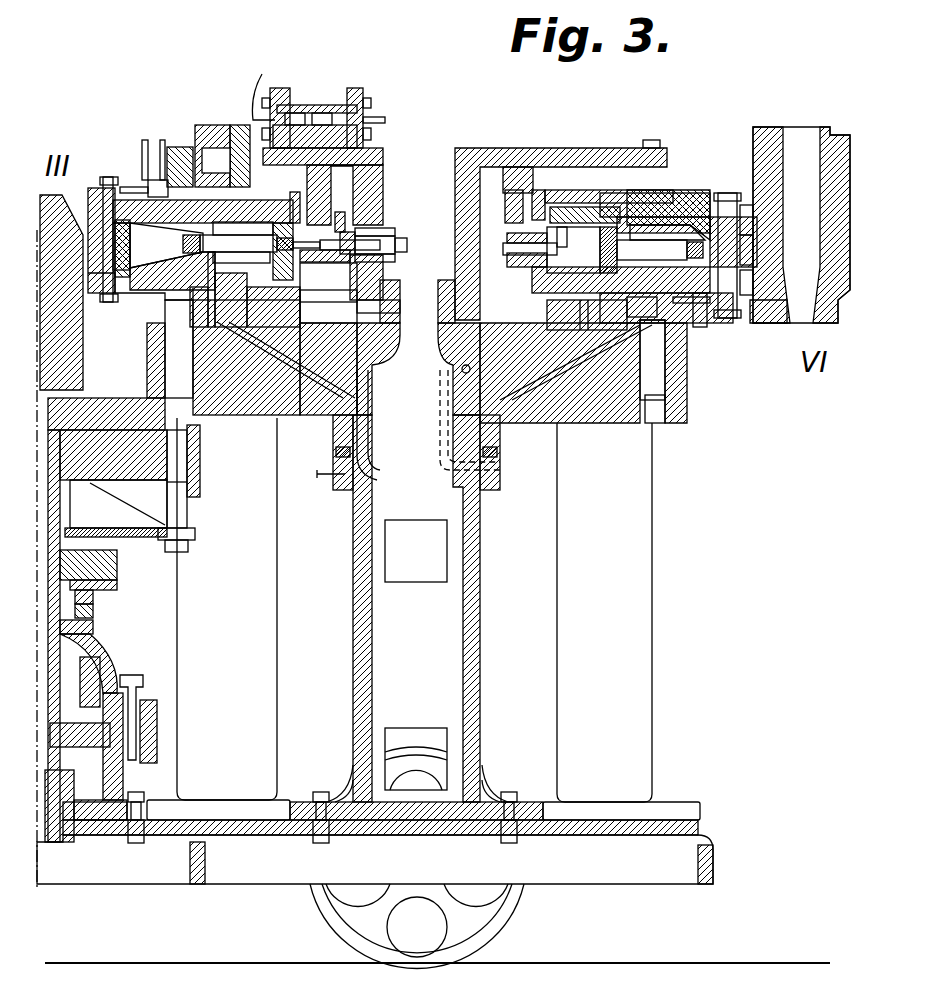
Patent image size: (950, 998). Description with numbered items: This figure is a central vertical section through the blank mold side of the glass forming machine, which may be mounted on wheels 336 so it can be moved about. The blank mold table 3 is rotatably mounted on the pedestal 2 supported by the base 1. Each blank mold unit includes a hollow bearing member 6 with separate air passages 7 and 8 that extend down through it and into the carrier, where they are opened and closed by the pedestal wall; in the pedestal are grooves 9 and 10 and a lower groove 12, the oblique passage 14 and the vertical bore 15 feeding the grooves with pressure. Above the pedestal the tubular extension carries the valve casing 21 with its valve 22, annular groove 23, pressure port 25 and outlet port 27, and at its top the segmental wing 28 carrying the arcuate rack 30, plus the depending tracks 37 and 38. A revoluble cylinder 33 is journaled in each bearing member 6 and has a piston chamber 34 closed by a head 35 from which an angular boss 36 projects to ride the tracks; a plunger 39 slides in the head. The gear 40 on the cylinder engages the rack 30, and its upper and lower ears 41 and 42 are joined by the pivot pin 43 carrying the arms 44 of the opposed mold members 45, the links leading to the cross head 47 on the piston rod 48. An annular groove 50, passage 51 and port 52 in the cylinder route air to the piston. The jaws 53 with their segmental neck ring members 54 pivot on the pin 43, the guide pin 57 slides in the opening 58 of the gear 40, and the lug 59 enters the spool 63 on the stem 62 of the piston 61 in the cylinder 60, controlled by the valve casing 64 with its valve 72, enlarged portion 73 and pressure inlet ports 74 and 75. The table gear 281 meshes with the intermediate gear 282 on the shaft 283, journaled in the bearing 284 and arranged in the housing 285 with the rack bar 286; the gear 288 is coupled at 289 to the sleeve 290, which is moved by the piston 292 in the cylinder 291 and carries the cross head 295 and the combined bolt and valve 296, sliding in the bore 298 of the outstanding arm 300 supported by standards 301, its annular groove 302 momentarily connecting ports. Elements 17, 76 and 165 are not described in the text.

The base 1 is at (600, 880).
The pedestal 2 is at (480, 615).
The blank mold table 3 is at (688, 380).
The hollow bearing member 6 is at (300, 313).
The upper air passage 7 is at (303, 298).
The lower air passage 8 is at (415, 350).
The groove 9 is at (400, 245).
The groove 10 is at (480, 150).
The lower groove 12 is at (355, 410).
The oblique passage 14 is at (456, 365).
The vertical bore 15 is at (440, 455).
The bearing block 17 is at (353, 437).
The valve casing 21 is at (395, 240).
The valve 22 is at (405, 240).
The annular groove 23 is at (352, 232).
The pressure port 25 is at (395, 258).
The outlet port 27 is at (385, 228).
The segmental wing 28 is at (632, 152).
The arcuate rack 30 is at (668, 182).
The cylinder 33 is at (285, 200).
The piston chamber 34 is at (545, 267).
The head 35 is at (520, 224).
The angular boss 36 is at (505, 252).
The track 37 is at (502, 206).
The depending track 38 is at (328, 219).
The plunger 39 is at (560, 245).
The gear 40 is at (175, 308).
The upper ear 41 is at (735, 193).
The lower ear 42 is at (755, 287).
The pivot pin 43 is at (755, 212).
The arms 44 is at (755, 240).
The blank mold member 45 is at (803, 135).
The cross head 47 is at (667, 231).
The piston rod 48 is at (663, 238).
The annular groove 50 is at (580, 190).
The passage 51 is at (265, 252).
The port 52 is at (727, 210).
The jaws 53 is at (770, 323).
The segmental member 54 is at (845, 325).
The guide pin 57 is at (133, 195).
The opening 58 is at (168, 195).
The lug 59 is at (162, 140).
The cylinder 60 is at (212, 145).
The piston 61 is at (235, 145).
The stem 62 is at (213, 163).
The spool 63 is at (145, 140).
The valve casing 64 is at (332, 100).
The valve 72 is at (358, 110).
The centrally enlarged portion 73 is at (322, 118).
The pressure inlet port 74 is at (385, 120).
The pressure inlet port 75 is at (266, 88).
The cylinder 76 is at (652, 507).
The frame wall 165 is at (70, 372).
The table gear 281 is at (688, 415).
The intermediate gear 282 is at (270, 684).
The shaft 283 is at (70, 632).
The bearing 284 is at (75, 790).
The housing 285 is at (113, 665).
The rack bar 286 is at (155, 730).
The gear 288 is at (138, 700).
The coupling 289 is at (75, 720).
The sleeve 290 is at (60, 680).
The cylinder 291 is at (70, 598).
The piston 292 is at (75, 615).
The cross head 295 is at (100, 525).
The combined bolt and valve 296 is at (190, 518).
The bore 298 is at (200, 465).
The outstanding arm 300 is at (187, 500).
The standard 301 is at (110, 555).
The annular groove 302 is at (190, 482).
The wheels 336 is at (505, 920).